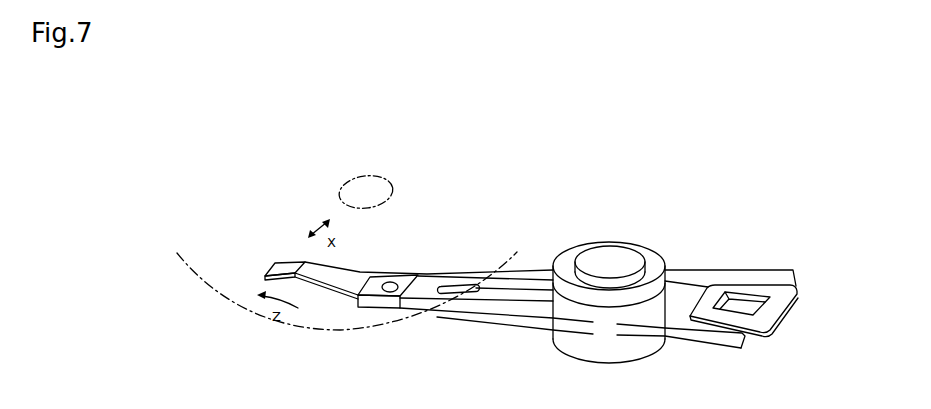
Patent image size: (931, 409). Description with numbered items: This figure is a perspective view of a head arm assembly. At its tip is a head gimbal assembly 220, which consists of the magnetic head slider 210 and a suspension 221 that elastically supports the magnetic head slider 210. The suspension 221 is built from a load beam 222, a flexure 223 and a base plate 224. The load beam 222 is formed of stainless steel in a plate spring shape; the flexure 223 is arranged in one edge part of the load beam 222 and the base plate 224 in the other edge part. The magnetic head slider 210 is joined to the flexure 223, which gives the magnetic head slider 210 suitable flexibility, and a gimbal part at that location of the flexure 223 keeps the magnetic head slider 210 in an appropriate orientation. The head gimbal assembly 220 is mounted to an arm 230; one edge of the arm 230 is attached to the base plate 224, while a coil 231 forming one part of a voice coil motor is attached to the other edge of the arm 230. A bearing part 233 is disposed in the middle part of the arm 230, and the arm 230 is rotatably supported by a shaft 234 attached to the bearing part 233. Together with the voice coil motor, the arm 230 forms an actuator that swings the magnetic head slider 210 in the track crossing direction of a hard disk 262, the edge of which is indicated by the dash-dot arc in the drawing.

The magnetic head slider 210 is at (289, 263).
The head gimbal assembly 220 is at (353, 309).
The suspension 221 is at (353, 238).
The load beam 222 is at (372, 275).
The flexure 223 is at (268, 273).
The base plate 224 is at (417, 274).
The arm 230 is at (463, 313).
The coil 231 is at (780, 322).
The bearing part 233 is at (567, 254).
The shaft 234 is at (617, 257).
The hard disk 262 is at (296, 334).